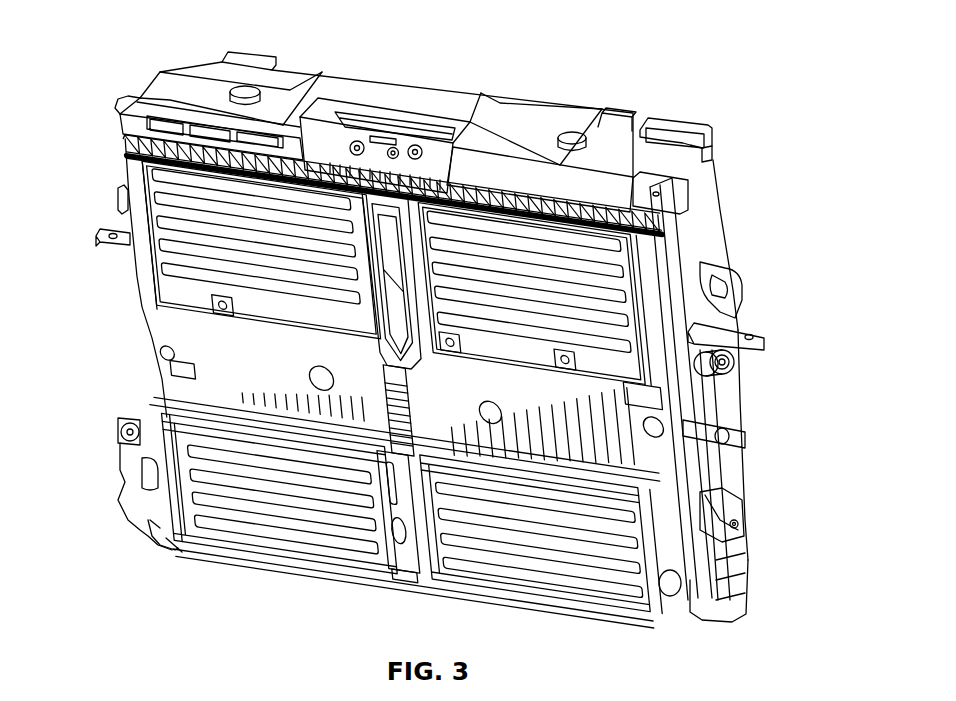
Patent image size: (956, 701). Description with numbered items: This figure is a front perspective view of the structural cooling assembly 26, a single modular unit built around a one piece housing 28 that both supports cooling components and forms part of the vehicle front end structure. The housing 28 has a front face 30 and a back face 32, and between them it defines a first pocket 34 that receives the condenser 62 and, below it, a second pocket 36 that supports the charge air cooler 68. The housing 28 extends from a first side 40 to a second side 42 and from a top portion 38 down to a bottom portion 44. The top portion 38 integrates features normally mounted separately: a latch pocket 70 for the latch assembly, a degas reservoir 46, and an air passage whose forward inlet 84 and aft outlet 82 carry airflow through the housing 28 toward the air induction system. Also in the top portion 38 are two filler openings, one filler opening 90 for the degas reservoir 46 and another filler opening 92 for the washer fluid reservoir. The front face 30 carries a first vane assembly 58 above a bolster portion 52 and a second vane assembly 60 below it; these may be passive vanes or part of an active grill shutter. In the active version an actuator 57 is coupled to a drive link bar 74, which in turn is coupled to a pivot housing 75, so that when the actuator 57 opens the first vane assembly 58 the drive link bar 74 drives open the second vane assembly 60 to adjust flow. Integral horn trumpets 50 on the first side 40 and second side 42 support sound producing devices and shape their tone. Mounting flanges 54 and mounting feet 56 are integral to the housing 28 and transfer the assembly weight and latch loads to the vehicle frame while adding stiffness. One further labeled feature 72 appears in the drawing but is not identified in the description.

The structural cooling assembly 26 is at (736, 158).
The housing 28 is at (362, 62).
The front face 30 is at (149, 543).
The back face 32 is at (712, 119).
The first pocket 34 is at (708, 242).
The second pocket 36 is at (641, 616).
The top portion 38 is at (493, 117).
The first side 40 is at (758, 297).
The second side 42 is at (129, 298).
The bottom portion 44 is at (438, 580).
The degas reservoir 46 is at (308, 83).
The horn trumpets 50 is at (734, 361).
The bolster portion 52 is at (237, 344).
The mounting flanges 54 is at (118, 232).
The mounting feet 56 is at (713, 621).
The actuator 57 is at (387, 270).
The first vane assembly 58 is at (80, 140).
The second vane assembly 60 is at (102, 436).
The condenser 62 is at (713, 416).
The charge air cooler 68 is at (739, 525).
The latch pocket 70 is at (372, 138).
The mounting holes 72 is at (418, 145).
The drive link bar 74 is at (402, 394).
The pivot housing 75 is at (381, 561).
The outlet 82 is at (592, 114).
The forward inlet 84 is at (190, 121).
The filler opening 90 is at (572, 130).
The filler opening 92 is at (240, 86).